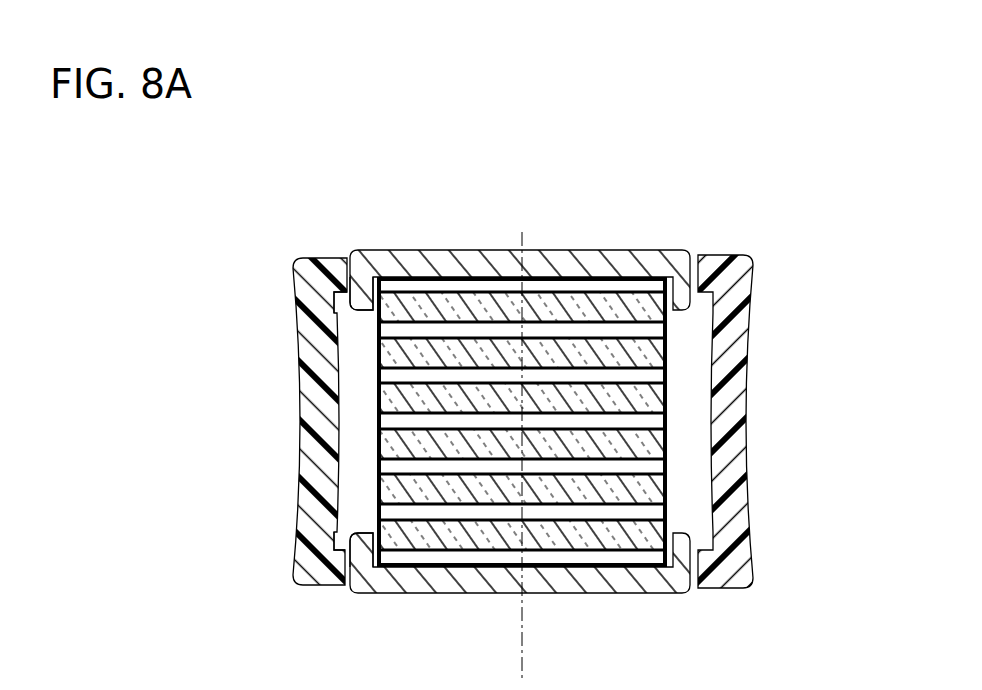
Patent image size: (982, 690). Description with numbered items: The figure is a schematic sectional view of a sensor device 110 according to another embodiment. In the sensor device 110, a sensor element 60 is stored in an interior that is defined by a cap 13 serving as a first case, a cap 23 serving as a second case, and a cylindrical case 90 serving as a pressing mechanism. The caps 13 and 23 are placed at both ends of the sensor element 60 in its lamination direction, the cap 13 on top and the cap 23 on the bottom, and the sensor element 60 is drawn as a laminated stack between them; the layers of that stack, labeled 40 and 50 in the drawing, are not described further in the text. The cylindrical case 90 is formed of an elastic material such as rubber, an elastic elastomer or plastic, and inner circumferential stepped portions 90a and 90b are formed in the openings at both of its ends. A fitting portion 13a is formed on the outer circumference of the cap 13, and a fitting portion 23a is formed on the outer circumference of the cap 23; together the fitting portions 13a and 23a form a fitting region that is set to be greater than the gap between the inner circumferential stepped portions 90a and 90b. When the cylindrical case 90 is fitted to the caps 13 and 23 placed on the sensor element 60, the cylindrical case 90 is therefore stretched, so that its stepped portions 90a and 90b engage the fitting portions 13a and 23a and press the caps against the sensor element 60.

The sensor device 110 is at (690, 168).
The cap 13 is at (572, 258).
The fitting portion 13a is at (343, 287).
The cap 23 is at (538, 587).
The fitting portion 23a is at (332, 578).
The dielectric layer 40 is at (403, 445).
The internal electrode 50 is at (645, 467).
The sensor element 60 is at (676, 438).
The cylindrical case 90 is at (740, 330).
The inner circumferential stepped portion 90a is at (345, 310).
The inner circumferential stepped portion 90b is at (340, 530).